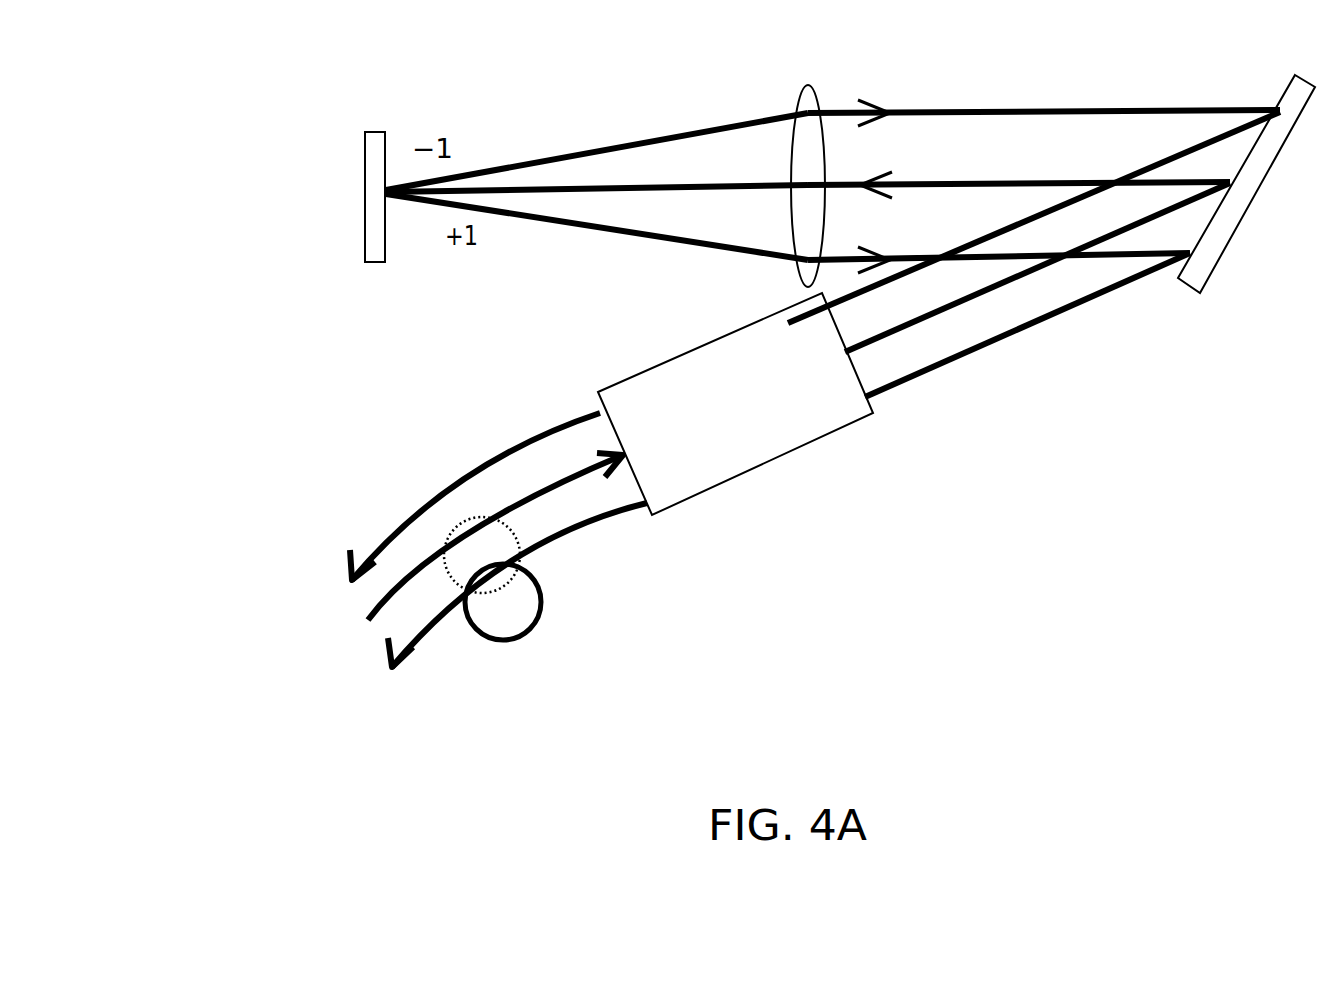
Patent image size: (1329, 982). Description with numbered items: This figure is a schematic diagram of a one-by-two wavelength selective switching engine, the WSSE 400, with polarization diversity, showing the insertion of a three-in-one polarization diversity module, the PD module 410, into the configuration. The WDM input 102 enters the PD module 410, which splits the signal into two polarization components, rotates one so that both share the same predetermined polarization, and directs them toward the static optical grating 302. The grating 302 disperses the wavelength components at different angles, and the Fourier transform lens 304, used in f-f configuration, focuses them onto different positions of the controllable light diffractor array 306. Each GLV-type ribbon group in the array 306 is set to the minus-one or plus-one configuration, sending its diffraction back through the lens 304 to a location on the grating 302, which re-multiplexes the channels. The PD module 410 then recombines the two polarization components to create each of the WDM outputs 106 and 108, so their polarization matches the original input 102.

The WSSE 400 is at (1143, 822).
The static optical grating 302 is at (1228, 233).
The Fourier transform lens 304 is at (768, 162).
The controllable light diffractor array 306 is at (326, 199).
The polarization diversity module 410 is at (735, 439).
The WDM input 102 is at (401, 553).
The WDM output 106 is at (350, 503).
The WDM output 108 is at (387, 612).